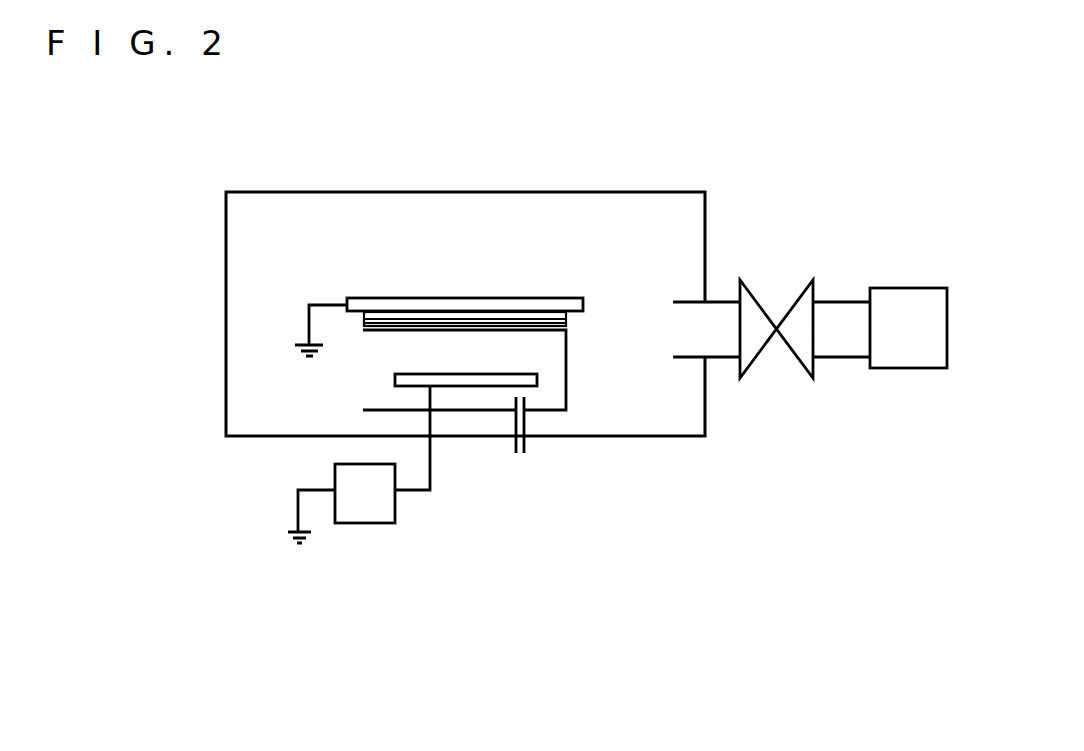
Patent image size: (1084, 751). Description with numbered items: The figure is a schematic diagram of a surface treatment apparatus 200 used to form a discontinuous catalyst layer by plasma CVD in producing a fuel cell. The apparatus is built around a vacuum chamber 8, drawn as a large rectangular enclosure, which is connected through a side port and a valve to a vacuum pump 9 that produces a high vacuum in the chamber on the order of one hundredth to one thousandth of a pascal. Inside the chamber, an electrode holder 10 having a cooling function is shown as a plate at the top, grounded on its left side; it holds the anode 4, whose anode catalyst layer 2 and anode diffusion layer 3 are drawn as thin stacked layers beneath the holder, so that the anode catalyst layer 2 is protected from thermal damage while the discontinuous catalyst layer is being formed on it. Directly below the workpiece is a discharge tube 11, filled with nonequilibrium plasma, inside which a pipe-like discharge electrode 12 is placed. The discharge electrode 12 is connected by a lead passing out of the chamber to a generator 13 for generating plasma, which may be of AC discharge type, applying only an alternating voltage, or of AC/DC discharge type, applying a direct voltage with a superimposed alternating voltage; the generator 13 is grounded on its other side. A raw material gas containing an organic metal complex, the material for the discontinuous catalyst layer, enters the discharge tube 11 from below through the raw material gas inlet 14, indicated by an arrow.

The surface treatment apparatus 200 is at (830, 190).
The vacuum chamber 8 is at (705, 415).
The vacuum pump 9 is at (900, 368).
The electrode holder 10 is at (563, 300).
The anode 4 is at (465, 275).
The anode catalyst layer 2 is at (468, 262).
The anode diffusion layer 3 is at (435, 316).
The discharge tube 11 is at (566, 382).
The discharge electrode 12 is at (515, 375).
The generator 13 is at (380, 523).
The raw material gas inlet 14 is at (520, 461).